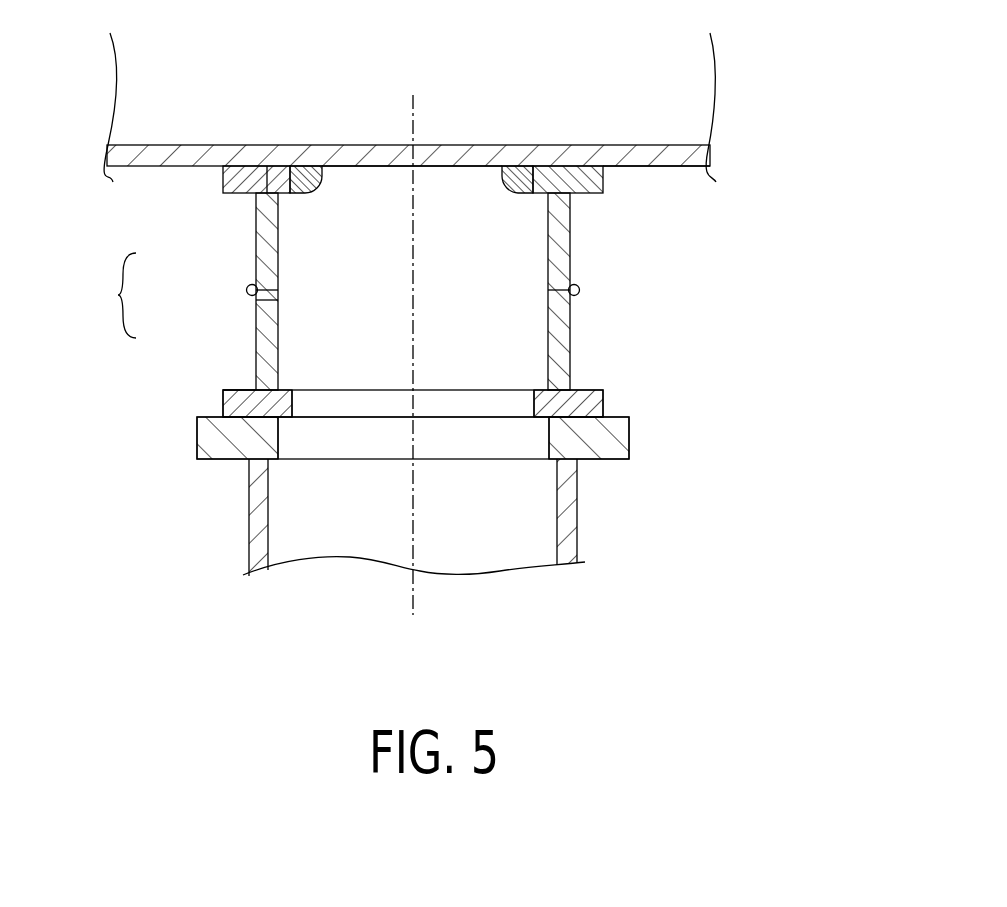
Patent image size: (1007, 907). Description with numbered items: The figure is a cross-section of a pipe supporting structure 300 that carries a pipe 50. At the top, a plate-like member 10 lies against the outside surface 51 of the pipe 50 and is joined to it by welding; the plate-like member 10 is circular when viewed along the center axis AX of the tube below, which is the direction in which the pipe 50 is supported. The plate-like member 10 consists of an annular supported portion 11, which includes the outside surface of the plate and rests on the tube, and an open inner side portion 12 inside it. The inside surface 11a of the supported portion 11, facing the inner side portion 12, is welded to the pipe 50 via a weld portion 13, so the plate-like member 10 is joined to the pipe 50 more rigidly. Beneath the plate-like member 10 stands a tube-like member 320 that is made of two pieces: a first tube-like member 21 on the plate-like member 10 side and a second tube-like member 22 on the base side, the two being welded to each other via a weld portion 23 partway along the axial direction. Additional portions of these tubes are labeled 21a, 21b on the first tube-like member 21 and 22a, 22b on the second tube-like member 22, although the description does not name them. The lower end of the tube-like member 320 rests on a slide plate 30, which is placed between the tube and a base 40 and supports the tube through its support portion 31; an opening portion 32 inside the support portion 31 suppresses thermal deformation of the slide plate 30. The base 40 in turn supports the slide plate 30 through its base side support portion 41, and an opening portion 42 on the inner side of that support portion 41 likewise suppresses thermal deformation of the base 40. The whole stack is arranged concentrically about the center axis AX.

The plate-like member 10 is at (378, 221).
The supported portion 11 is at (599, 196).
The inside surface 11a is at (308, 164).
The inner side portion 12 is at (440, 168).
The weld portion 13 is at (516, 164).
The first tube-like member 21 is at (255, 257).
The flange portion 21a is at (252, 163).
The groove 21b is at (268, 294).
The second tube-like member 22 is at (246, 290).
The seal contact portion 22a is at (226, 389).
The O-ring seal 22b is at (578, 284).
The weld portion 23 is at (255, 310).
The slide plate 30 is at (400, 399).
The support portion 31 is at (603, 405).
The opening portion 32 is at (514, 406).
The base 40 is at (398, 446).
The base side support portion 41 is at (623, 435).
The opening portion 42 is at (458, 438).
The pipe 50 is at (632, 140).
The outside surface 51 is at (682, 167).
The pipe supporting structure 300 is at (429, 362).
The tube-like member 320 is at (100, 295).
The center axis AX is at (416, 345).